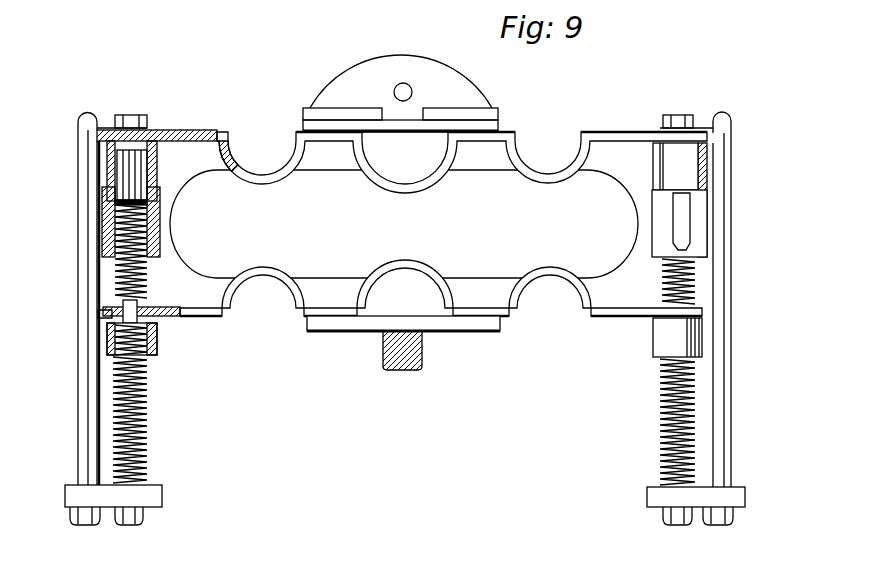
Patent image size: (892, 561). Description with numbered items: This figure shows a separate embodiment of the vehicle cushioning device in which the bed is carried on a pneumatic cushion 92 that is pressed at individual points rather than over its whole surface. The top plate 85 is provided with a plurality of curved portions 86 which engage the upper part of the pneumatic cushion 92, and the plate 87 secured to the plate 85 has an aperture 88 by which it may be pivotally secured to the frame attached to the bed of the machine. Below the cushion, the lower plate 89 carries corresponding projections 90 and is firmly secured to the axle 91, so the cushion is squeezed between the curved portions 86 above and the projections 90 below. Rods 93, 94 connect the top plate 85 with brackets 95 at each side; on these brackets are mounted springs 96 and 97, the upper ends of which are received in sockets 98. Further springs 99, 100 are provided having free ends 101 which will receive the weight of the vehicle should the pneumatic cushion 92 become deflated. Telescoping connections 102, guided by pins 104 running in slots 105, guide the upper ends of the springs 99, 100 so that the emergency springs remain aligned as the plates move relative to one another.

The plate 85 is at (452, 101).
The curved portions 86 is at (272, 174).
The plate 87 is at (440, 78).
The aperture 88 is at (401, 83).
The lower plate 89 is at (507, 311).
The projections 90 is at (268, 278).
The axle 91 is at (383, 365).
The pneumatic cushion 92 is at (215, 267).
The rod 93 is at (82, 378).
The rod 94 is at (722, 368).
The brackets 95 is at (112, 497).
The spring 96 is at (145, 427).
The spring 97 is at (662, 450).
The sockets 98 is at (110, 333).
The spring 99 is at (117, 272).
The spring 100 is at (693, 282).
The free ends 101 is at (140, 192).
The telescoping connections 102 is at (220, 136).
The pins 104 is at (700, 187).
The slots 105 is at (677, 219).